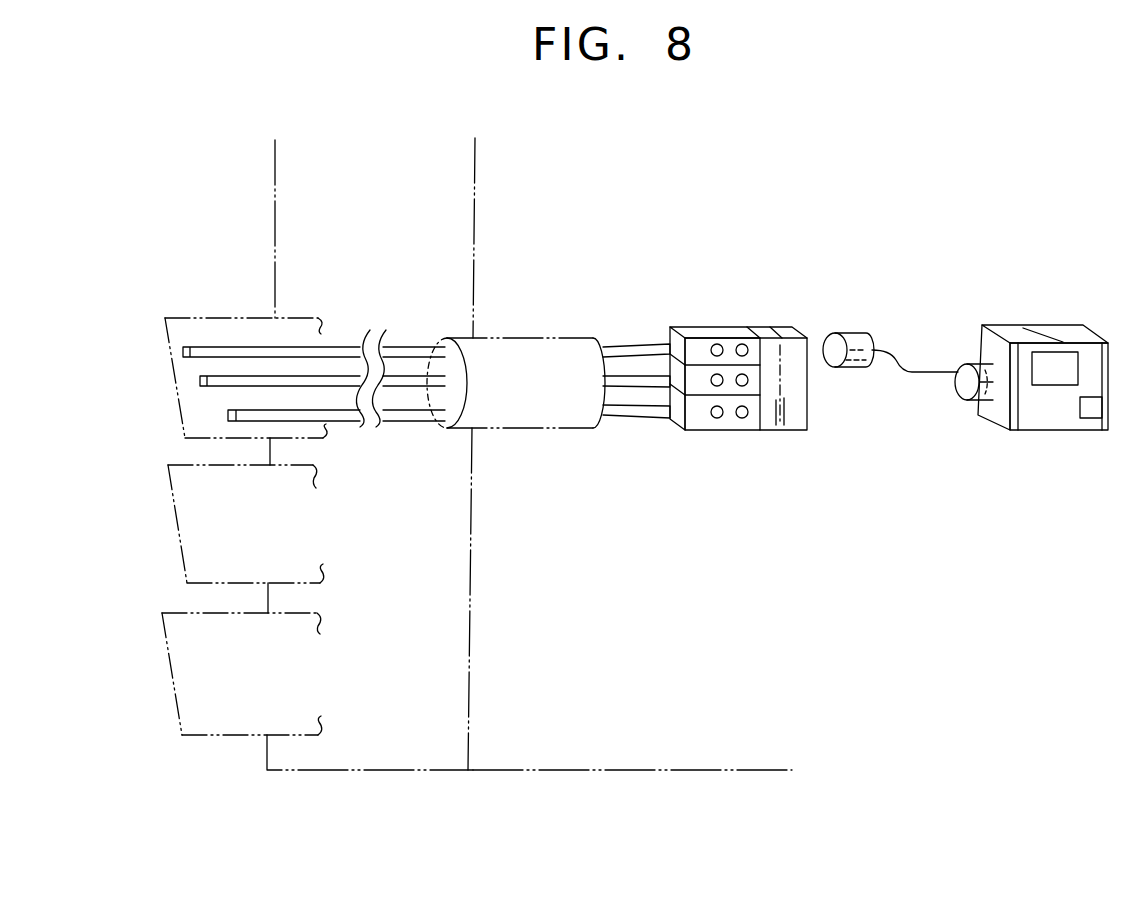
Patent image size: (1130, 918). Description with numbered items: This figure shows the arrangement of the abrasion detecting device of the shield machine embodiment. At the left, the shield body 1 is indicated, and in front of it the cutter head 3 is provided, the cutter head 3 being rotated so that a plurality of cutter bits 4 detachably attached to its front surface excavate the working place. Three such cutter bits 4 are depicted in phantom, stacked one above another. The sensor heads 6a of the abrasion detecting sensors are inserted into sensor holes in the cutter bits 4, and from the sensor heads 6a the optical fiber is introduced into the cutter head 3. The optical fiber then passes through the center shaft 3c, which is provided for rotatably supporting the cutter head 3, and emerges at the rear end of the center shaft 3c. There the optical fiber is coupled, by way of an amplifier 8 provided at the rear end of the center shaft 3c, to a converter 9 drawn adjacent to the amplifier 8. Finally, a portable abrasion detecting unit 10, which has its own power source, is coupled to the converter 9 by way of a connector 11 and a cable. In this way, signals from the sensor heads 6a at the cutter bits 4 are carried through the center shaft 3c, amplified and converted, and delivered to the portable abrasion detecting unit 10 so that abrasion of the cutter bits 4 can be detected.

The shield body 1 is at (638, 758).
The cutter head 3 is at (388, 755).
The center shaft 3c is at (518, 350).
The cutter bits 4 is at (183, 398).
The sensor heads 6a is at (328, 418).
The amplifier 8 is at (697, 423).
The converter 9 is at (793, 423).
The portable abrasion detecting unit 10 is at (1042, 425).
The connector 11 is at (860, 370).